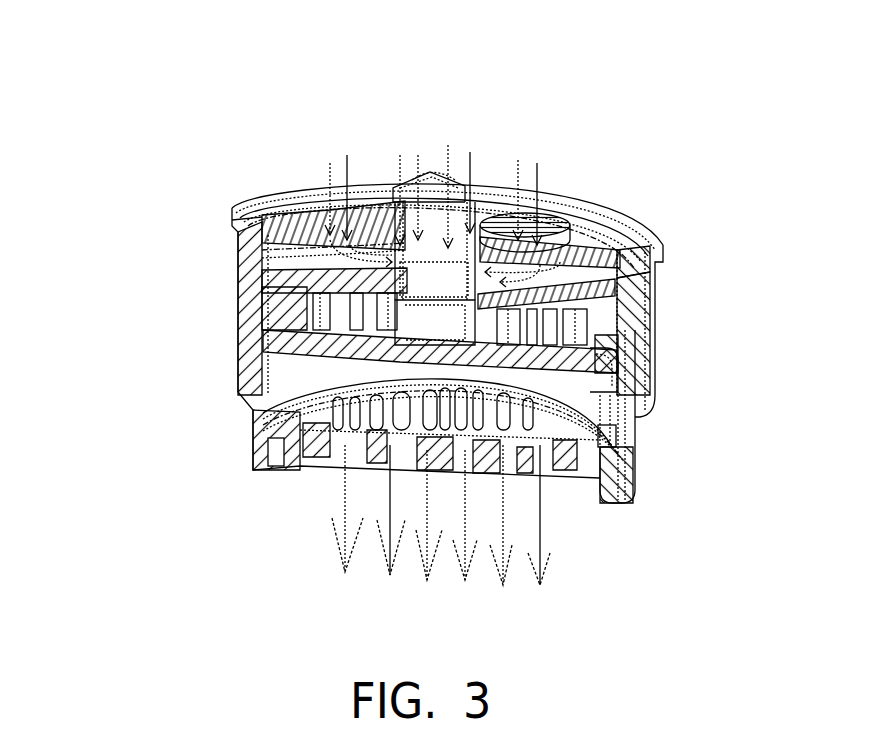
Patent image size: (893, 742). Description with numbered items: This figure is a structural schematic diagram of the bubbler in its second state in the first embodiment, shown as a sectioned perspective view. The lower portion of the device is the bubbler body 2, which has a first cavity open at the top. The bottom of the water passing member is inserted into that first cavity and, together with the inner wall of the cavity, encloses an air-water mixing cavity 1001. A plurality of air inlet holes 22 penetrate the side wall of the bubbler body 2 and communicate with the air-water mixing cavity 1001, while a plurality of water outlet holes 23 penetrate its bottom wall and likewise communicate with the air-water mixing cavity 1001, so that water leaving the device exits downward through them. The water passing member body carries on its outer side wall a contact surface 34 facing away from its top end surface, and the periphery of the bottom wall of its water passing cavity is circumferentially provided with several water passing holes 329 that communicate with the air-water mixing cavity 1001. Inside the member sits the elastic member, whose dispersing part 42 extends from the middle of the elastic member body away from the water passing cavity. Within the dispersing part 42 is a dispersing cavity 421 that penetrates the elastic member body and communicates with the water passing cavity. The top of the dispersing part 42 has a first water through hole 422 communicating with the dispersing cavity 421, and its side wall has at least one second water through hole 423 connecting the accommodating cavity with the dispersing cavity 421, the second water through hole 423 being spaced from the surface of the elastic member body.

The bubbler body 2 is at (258, 432).
The air inlet holes 22 is at (630, 362).
The water outlet holes 23 is at (345, 448).
The contact surface 34 is at (637, 318).
The dispersing part 42 is at (482, 225).
The dispersing cavity 421 is at (405, 232).
The first water through hole 422 is at (467, 183).
The second water through hole 423 is at (415, 257).
The water passing holes 329 is at (617, 377).
The air-water mixing cavity 1001 is at (612, 435).